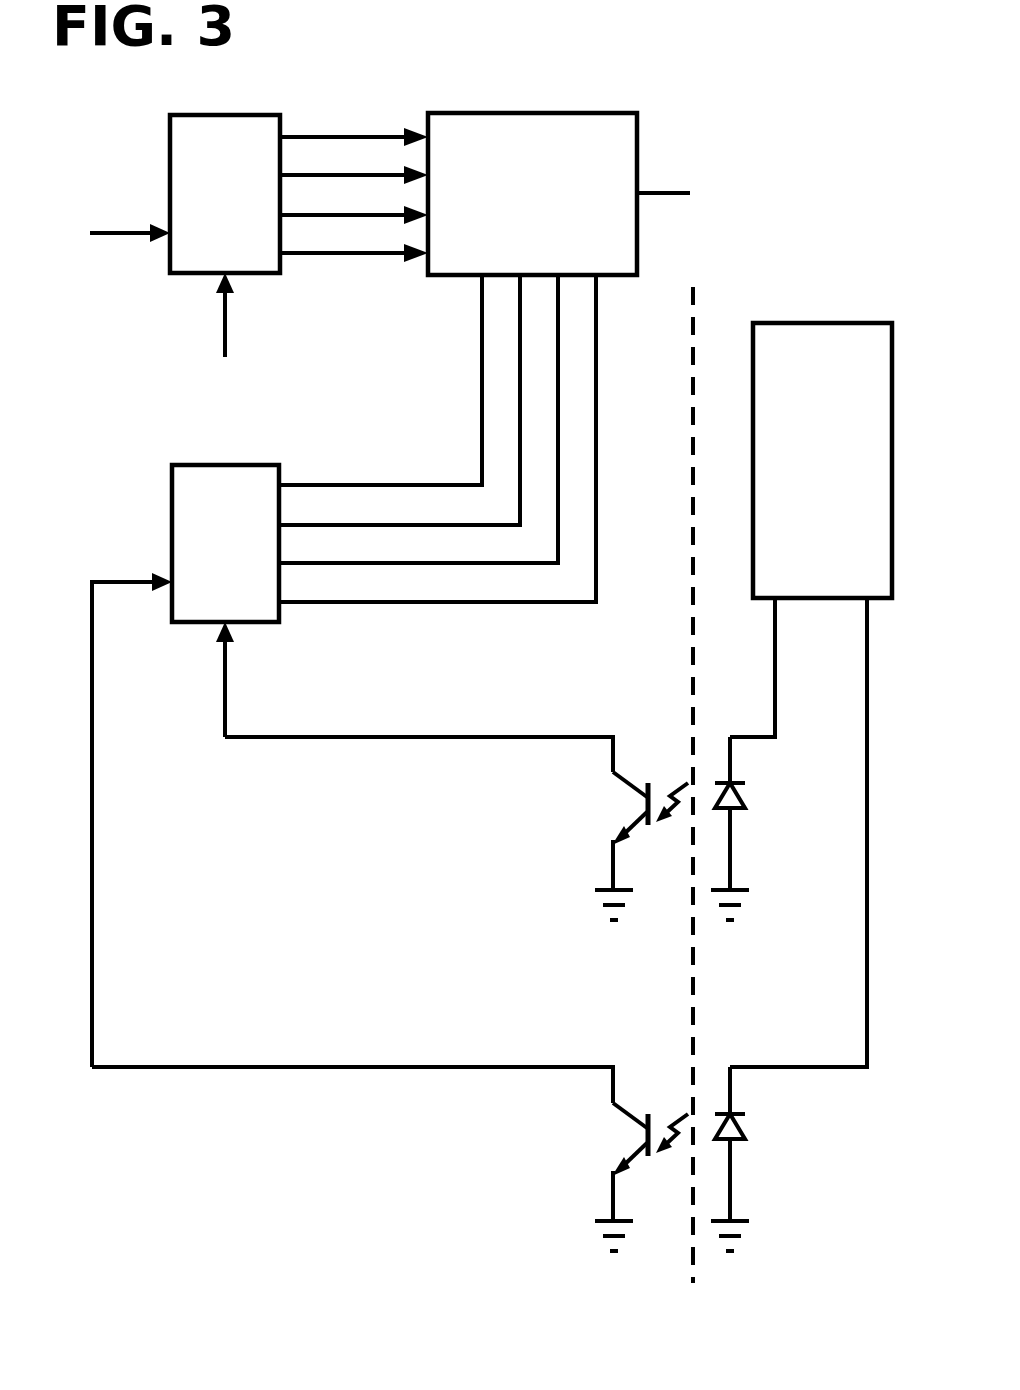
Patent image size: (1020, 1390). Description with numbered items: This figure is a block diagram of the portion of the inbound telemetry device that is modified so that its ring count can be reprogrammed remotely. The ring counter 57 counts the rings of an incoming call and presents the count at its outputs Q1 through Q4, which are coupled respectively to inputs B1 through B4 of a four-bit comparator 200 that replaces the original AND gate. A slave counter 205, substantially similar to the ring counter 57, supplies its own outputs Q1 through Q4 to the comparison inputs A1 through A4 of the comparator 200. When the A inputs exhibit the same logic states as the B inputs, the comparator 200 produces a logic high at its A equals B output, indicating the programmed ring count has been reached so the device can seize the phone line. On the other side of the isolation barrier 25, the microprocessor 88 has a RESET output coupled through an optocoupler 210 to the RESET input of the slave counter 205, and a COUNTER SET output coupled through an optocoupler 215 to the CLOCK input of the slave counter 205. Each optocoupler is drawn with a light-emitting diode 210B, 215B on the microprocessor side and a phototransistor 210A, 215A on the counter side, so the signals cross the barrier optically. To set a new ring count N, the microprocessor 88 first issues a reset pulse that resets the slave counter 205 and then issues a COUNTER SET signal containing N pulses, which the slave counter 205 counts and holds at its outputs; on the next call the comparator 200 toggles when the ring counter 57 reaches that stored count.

The ring counter 57 is at (228, 113).
The comparator 200 is at (497, 113).
The slave counter 205 is at (222, 465).
The microprocessor 88 is at (812, 323).
The isolation barrier 25 is at (690, 360).
The optocoupler 210 is at (520, 817).
The phototransistor 210A is at (625, 787).
The light emitting diode 210B is at (746, 800).
The optocoupler 215 is at (454, 1148).
The phototransistor 215A is at (625, 1118).
The light emitting diode 215B is at (746, 1131).